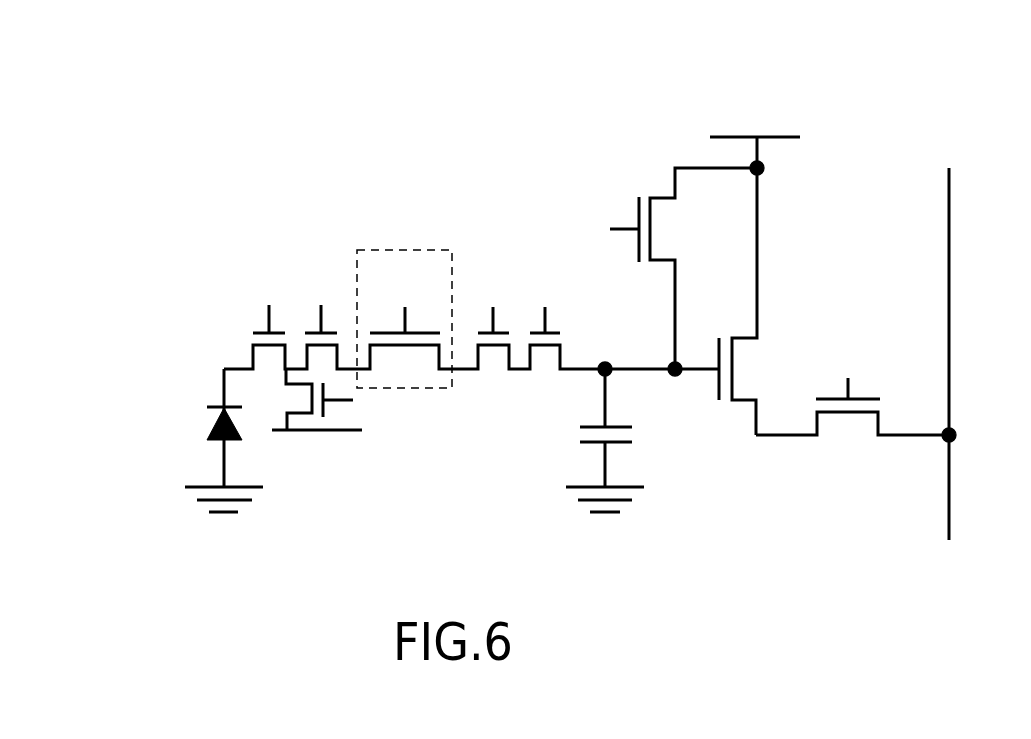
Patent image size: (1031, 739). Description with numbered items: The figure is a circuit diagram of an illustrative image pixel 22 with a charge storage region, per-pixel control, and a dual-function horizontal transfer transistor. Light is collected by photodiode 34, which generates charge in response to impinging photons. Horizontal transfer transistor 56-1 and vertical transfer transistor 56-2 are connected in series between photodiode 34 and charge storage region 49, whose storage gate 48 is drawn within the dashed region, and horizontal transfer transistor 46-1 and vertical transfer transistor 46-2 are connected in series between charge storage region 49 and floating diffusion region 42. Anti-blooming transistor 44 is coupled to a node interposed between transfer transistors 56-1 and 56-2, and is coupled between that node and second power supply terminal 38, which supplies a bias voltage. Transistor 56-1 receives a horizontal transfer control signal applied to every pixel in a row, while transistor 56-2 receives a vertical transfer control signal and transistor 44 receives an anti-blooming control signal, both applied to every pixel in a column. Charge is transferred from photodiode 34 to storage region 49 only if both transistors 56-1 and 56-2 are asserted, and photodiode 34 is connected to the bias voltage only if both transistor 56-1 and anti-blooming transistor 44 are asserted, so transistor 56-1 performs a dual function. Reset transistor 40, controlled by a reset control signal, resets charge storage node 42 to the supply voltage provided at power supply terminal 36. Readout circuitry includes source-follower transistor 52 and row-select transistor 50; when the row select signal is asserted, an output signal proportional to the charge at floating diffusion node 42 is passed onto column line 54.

The image pixel 22 is at (189, 130).
The photodiode 34 is at (168, 455).
The power supply terminal 36 is at (804, 117).
The second power supply terminal 38 is at (343, 450).
The reset transistor 40 is at (648, 183).
The charge storage node 42 is at (623, 388).
The anti-blooming transistor 44 is at (340, 420).
The horizontal transfer transistor 46-1 is at (493, 362).
The vertical transfer transistor 46-2 is at (550, 372).
The storage gate 48 is at (392, 258).
The charge storage region 49 is at (445, 248).
The row-select transistor 50 is at (850, 447).
The source-follower transistor 52 is at (722, 327).
The column line 54 is at (951, 310).
The horizontal transfer transistor 56-1 is at (243, 338).
The vertical transfer transistor 56-2 is at (305, 317).